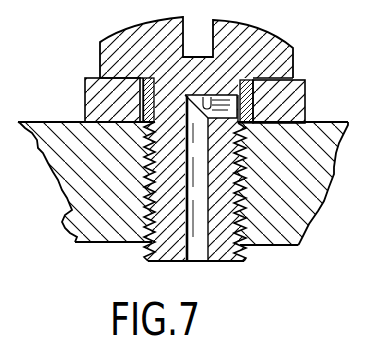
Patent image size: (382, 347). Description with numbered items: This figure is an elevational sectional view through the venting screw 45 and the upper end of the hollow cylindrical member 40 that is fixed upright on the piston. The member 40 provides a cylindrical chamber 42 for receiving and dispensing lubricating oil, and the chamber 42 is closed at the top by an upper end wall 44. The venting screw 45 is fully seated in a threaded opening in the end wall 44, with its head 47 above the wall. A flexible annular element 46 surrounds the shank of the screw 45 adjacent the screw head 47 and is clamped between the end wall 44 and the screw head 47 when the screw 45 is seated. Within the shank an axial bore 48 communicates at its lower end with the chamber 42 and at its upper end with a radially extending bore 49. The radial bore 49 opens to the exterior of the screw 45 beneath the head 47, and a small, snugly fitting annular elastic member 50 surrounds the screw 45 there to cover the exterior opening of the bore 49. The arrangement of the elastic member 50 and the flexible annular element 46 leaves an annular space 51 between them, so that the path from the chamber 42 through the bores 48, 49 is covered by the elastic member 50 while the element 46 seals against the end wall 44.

The cylindrical member 40 is at (318, 125).
The cylindrical chamber 42 is at (118, 246).
The upper end wall 44 is at (271, 246).
The venting screw 45 is at (152, 22).
The flexible annular element 46 is at (308, 95).
The screw head 47 is at (97, 60).
The axial bore 48 is at (190, 264).
The radially extending bore 49 is at (208, 97).
The annular elastic member 50 is at (260, 81).
The annular space 51 is at (262, 115).